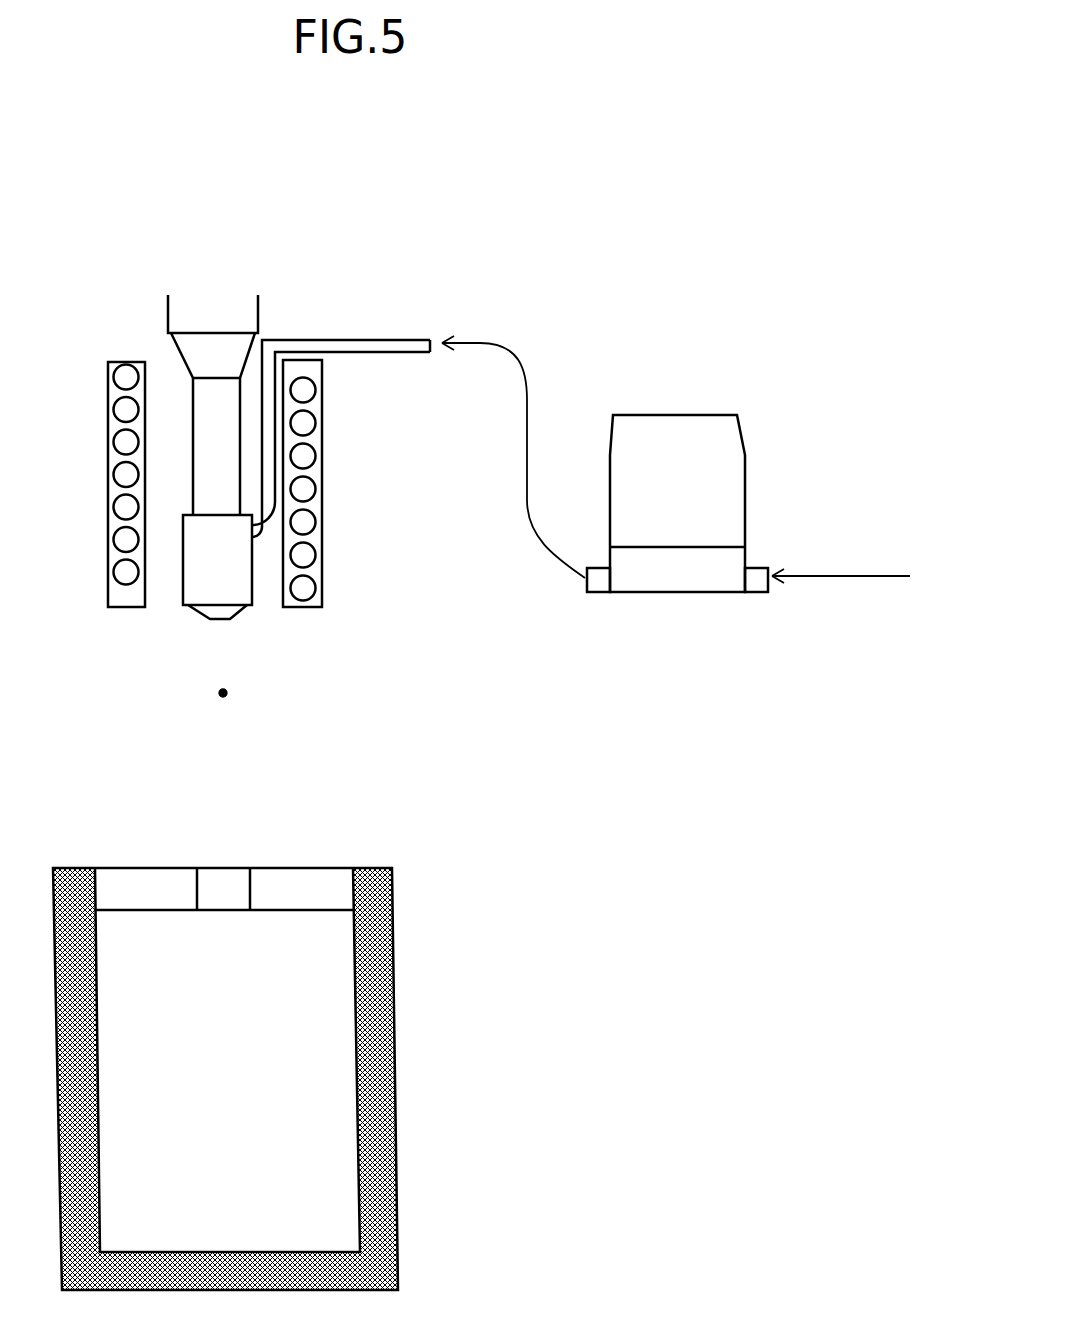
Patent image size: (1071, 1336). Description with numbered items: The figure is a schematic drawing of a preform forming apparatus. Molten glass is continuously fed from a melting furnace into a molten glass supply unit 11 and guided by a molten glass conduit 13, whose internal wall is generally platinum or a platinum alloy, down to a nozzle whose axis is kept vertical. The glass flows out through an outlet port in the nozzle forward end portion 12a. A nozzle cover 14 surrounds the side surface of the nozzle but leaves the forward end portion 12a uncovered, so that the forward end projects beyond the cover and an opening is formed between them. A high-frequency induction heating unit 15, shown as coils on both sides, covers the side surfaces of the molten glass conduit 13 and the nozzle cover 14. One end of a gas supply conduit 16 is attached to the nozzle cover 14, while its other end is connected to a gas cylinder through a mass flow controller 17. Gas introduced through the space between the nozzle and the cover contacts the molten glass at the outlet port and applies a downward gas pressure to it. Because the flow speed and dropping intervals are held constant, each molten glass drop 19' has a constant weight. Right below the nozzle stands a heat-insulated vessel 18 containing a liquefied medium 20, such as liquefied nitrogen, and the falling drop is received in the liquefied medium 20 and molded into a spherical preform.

The molten glass supply unit 11 is at (208, 303).
The nozzle forward end portion 12a is at (220, 620).
The molten glass conduit 13 is at (197, 448).
The nozzle cover 14 is at (241, 585).
The high-frequency induction heating unit 15 is at (316, 470).
The gas supply conduit 16 is at (385, 333).
The mass flow controller 17 is at (682, 426).
The heat-insulated vessel 18 is at (397, 1067).
The molten glass drop 19' is at (260, 705).
The liquefied medium 20 is at (285, 1152).